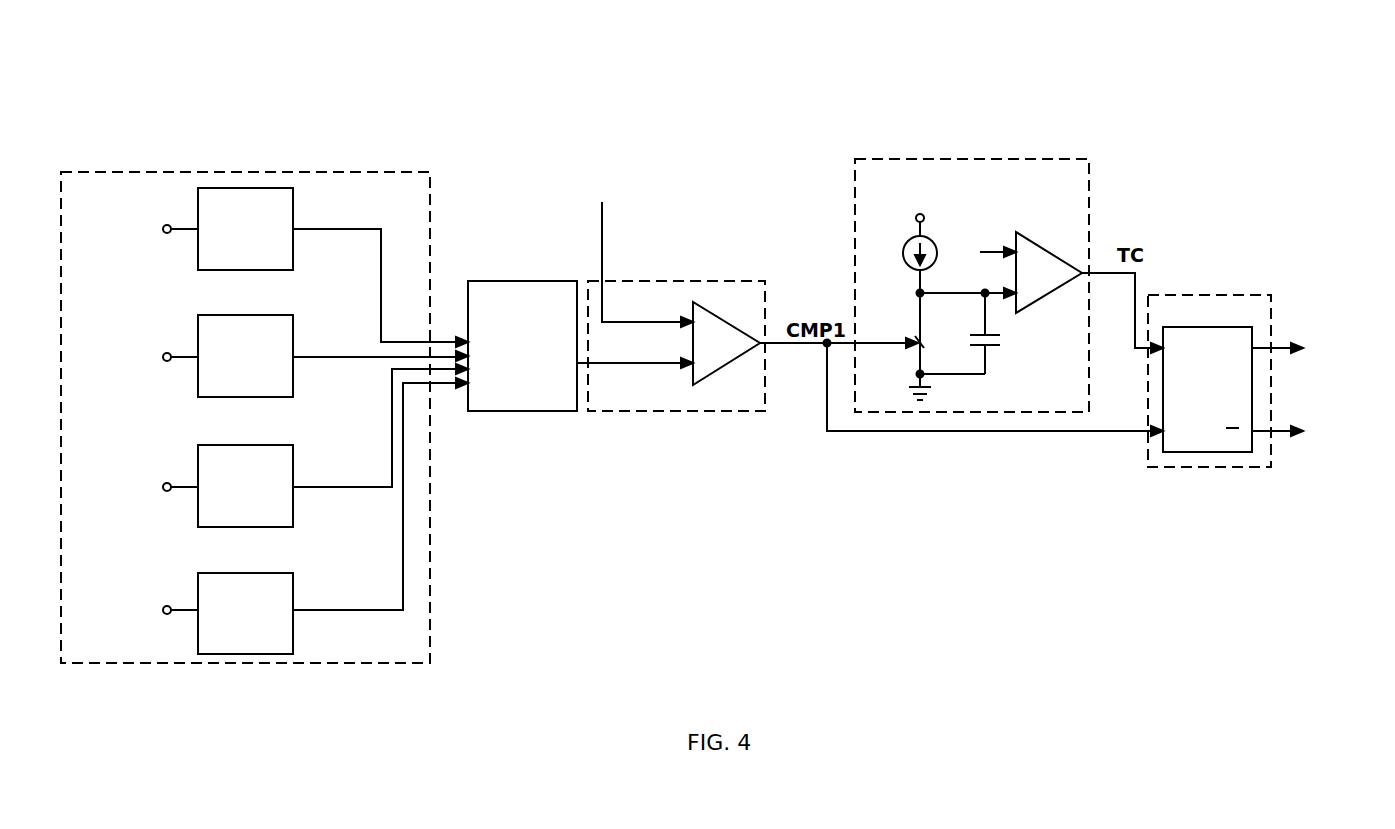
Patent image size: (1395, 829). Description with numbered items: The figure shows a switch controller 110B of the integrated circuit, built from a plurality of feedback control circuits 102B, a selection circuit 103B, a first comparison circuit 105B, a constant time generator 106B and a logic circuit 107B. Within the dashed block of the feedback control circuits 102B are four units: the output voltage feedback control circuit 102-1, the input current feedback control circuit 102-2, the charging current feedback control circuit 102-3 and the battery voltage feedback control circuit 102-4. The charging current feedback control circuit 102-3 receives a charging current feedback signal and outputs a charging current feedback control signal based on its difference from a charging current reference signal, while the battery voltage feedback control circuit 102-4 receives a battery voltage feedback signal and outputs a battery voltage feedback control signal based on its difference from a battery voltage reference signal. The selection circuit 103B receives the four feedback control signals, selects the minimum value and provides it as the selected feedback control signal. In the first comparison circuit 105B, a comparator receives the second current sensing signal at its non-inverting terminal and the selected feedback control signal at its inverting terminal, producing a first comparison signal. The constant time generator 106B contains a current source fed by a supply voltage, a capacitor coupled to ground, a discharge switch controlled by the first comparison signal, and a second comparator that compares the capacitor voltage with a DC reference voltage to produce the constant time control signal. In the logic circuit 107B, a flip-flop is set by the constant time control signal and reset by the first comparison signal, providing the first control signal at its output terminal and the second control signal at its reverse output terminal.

The switch controller 110B is at (579, 80).
The plurality of feedback control circuits 102B is at (300, 172).
The output voltage feedback control circuit 102-1 is at (194, 229).
The input current feedback control circuit 102-2 is at (206, 356).
The charging current feedback control circuit 102-3 is at (196, 486).
The battery voltage feedback control circuit 102-4 is at (190, 613).
The selection circuit 103B is at (508, 265).
The first comparison circuit 105B is at (615, 281).
The constant time generator 106B is at (920, 159).
The logic circuit 107B is at (1190, 295).